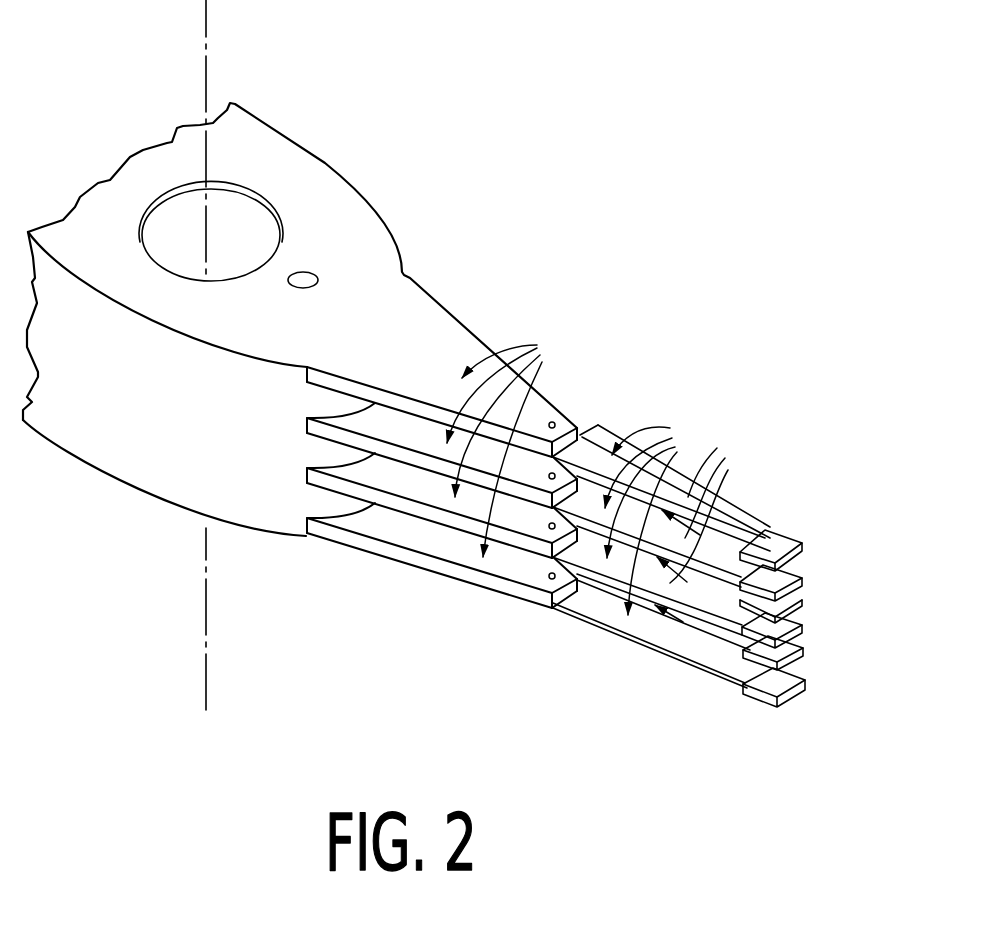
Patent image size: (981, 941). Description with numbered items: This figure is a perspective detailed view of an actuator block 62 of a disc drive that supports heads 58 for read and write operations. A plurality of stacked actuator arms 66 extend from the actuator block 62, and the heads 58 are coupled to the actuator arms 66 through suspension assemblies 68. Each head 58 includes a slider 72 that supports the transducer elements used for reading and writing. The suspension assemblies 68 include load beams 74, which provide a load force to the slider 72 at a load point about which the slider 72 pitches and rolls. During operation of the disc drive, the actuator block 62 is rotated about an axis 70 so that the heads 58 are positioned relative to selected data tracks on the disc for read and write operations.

The heads 58 is at (806, 582).
The actuator block 62 is at (313, 178).
The actuator arms 66 is at (508, 445).
The suspension assemblies 68 is at (654, 513).
The axis 70 is at (205, 83).
The slider 72 is at (803, 597).
The load beams 74 is at (697, 530).